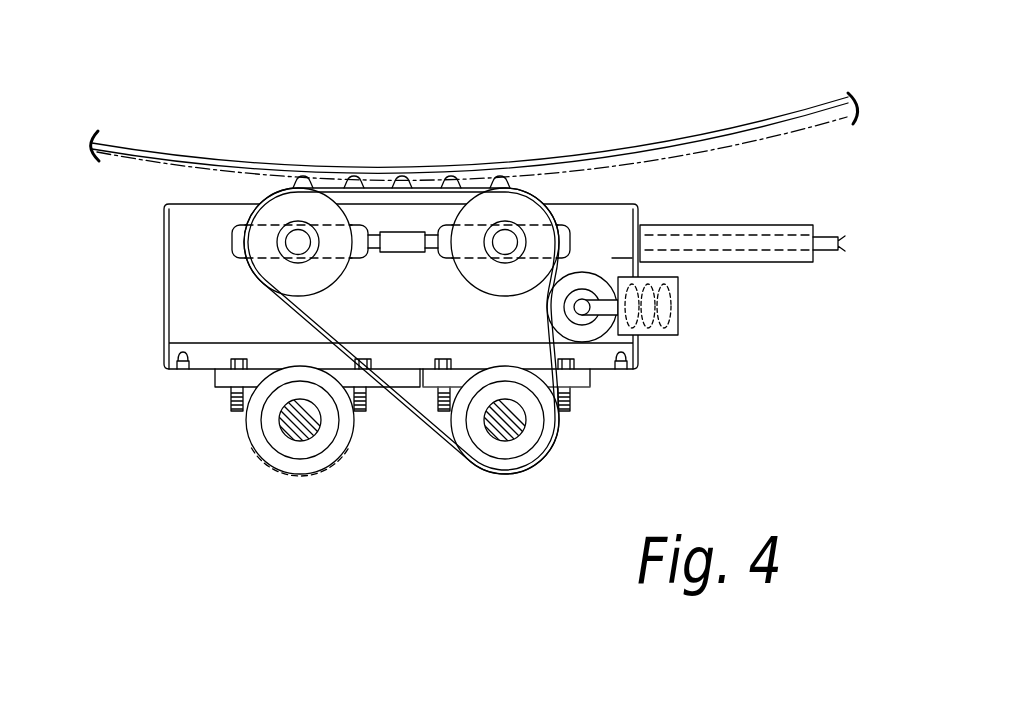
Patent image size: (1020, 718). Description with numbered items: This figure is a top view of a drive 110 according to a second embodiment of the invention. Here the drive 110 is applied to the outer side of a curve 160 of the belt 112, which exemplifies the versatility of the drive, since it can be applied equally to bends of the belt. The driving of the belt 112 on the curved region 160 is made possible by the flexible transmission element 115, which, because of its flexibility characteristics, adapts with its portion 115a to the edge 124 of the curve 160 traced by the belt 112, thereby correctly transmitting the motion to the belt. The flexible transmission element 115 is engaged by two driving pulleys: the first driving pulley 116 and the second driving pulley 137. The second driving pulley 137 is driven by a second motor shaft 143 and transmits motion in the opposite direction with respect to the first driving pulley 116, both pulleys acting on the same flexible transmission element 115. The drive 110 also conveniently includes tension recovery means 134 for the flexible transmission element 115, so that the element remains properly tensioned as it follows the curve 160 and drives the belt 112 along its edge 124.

The drive 110 is at (218, 435).
The belt 112 is at (582, 157).
The flexible transmission element 115 is at (284, 309).
The portion of the flexible transmission element 115a is at (512, 152).
The first driving pulley 116 is at (294, 462).
The edge of the curve 124 is at (793, 132).
The tension recovery means 134 is at (692, 312).
The second driving pulley 137 is at (547, 438).
The second motor shaft 143 is at (503, 432).
The curve of the belt 160 is at (123, 144).